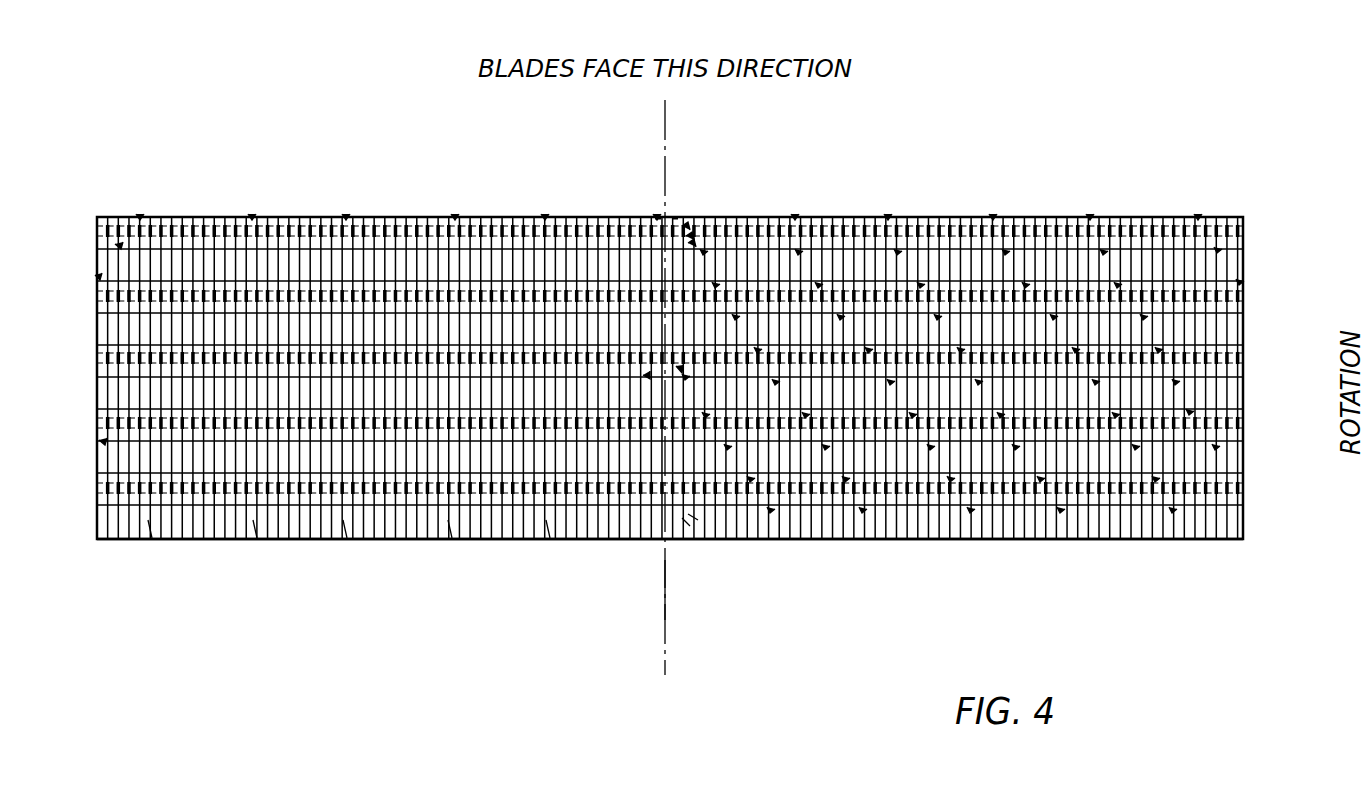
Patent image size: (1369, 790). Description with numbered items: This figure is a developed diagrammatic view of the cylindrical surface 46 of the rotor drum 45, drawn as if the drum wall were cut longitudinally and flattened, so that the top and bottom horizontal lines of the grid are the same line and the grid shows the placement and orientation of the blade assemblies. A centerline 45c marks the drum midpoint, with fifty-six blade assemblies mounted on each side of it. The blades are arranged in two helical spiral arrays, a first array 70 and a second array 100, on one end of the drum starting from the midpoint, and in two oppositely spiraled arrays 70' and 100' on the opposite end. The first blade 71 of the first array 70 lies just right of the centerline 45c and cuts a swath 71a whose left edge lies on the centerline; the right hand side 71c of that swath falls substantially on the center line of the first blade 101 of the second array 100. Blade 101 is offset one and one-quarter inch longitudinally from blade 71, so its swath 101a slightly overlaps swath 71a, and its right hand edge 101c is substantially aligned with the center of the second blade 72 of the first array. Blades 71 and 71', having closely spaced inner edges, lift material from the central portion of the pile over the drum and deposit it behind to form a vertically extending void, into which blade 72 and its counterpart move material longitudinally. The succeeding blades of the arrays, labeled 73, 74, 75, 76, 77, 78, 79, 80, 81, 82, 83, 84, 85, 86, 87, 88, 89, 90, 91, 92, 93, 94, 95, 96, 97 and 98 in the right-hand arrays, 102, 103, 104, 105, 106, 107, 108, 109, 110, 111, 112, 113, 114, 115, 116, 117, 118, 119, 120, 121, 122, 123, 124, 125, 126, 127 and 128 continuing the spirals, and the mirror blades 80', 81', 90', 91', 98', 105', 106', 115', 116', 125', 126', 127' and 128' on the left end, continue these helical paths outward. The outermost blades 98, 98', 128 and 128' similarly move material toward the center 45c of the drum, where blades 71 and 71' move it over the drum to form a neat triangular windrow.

The rotor drum 45 is at (184, 212).
The surface of the rotor drum 46 is at (238, 540).
The centerline of the drum 45c is at (665, 590).
The first helical spiral array 70 is at (699, 177).
The oppositely spiraled first array 70' is at (635, 169).
The first blade of the first array 71 is at (714, 201).
The first blade of the opposite first array 71' is at (636, 196).
The swath of the first blade 71a is at (690, 233).
The right hand side of the swath 71c is at (692, 240).
The second blade of the first array 72 is at (704, 252).
The blade 73 is at (716, 285).
The blade 74 is at (736, 317).
The blade 75 is at (758, 350).
The blade 76 is at (776, 382).
The blade 77 is at (806, 415).
The blade 78 is at (826, 447).
The blade 79 is at (846, 479).
The blade 80 is at (889, 496).
The blade (mirror) 80' is at (473, 555).
The blade 81 is at (910, 197).
The blade (mirror) 81' is at (480, 193).
The blade 82 is at (898, 252).
The blade 83 is at (921, 285).
The blade 84 is at (938, 317).
The blade 85 is at (961, 350).
The blade 86 is at (979, 382).
The blade 87 is at (1001, 415).
The blade 88 is at (1016, 447).
The blade 89 is at (1041, 479).
The blade 90 is at (1087, 496).
The blade (mirror) 90' is at (283, 555).
The blade 91 is at (1111, 197).
The blade (mirror) 91' is at (276, 189).
The blade 92 is at (1104, 252).
The blade 93 is at (1118, 285).
The blade 94 is at (1144, 317).
The blade 95 is at (1159, 350).
The blade 96 is at (1176, 382).
The blade 97 is at (1190, 412).
The outermost blade 98 is at (1247, 433).
The outermost blade 98' is at (66, 428).
The second helical spiral array 100 is at (698, 346).
The oppositely spiraled second array 100' is at (614, 362).
The first blade of the second array 101 is at (686, 378).
The swath of the first blade of the second array 101a is at (685, 522).
The right hand edge of swath 101a 101c is at (692, 517).
The blade 102 is at (706, 415).
The blade 103 is at (728, 447).
The blade 104 is at (751, 479).
The blade 105 is at (805, 496).
The blade (mirror) 105' is at (577, 555).
The blade 106 is at (823, 197).
The blade (mirror) 106' is at (575, 188).
The blade 107 is at (799, 252).
The blade 108 is at (819, 285).
The blade 109 is at (841, 317).
The blade 110 is at (869, 350).
The blade 111 is at (891, 382).
The blade 112 is at (913, 415).
The blade 113 is at (931, 447).
The blade 114 is at (951, 479).
The blade 115 is at (1005, 496).
The blade (mirror) 115' is at (379, 555).
The blade 116 is at (1021, 197).
The blade (mirror) 116' is at (378, 189).
The blade 117 is at (1006, 252).
The blade 118 is at (1026, 285).
The blade 119 is at (1054, 317).
The blade 120 is at (1076, 350).
The blade 121 is at (1096, 382).
The blade 122 is at (1116, 415).
The blade 123 is at (1136, 447).
The blade 124 is at (1156, 479).
The blade 125 is at (1207, 496).
The blade (mirror) 125' is at (184, 555).
The blade 126 is at (1227, 197).
The blade (mirror) 126' is at (114, 190).
The blade 127 is at (1260, 232).
The blade (mirror) 127' is at (75, 230).
The outermost blade 128 is at (1273, 266).
The outermost blade 128' is at (61, 266).